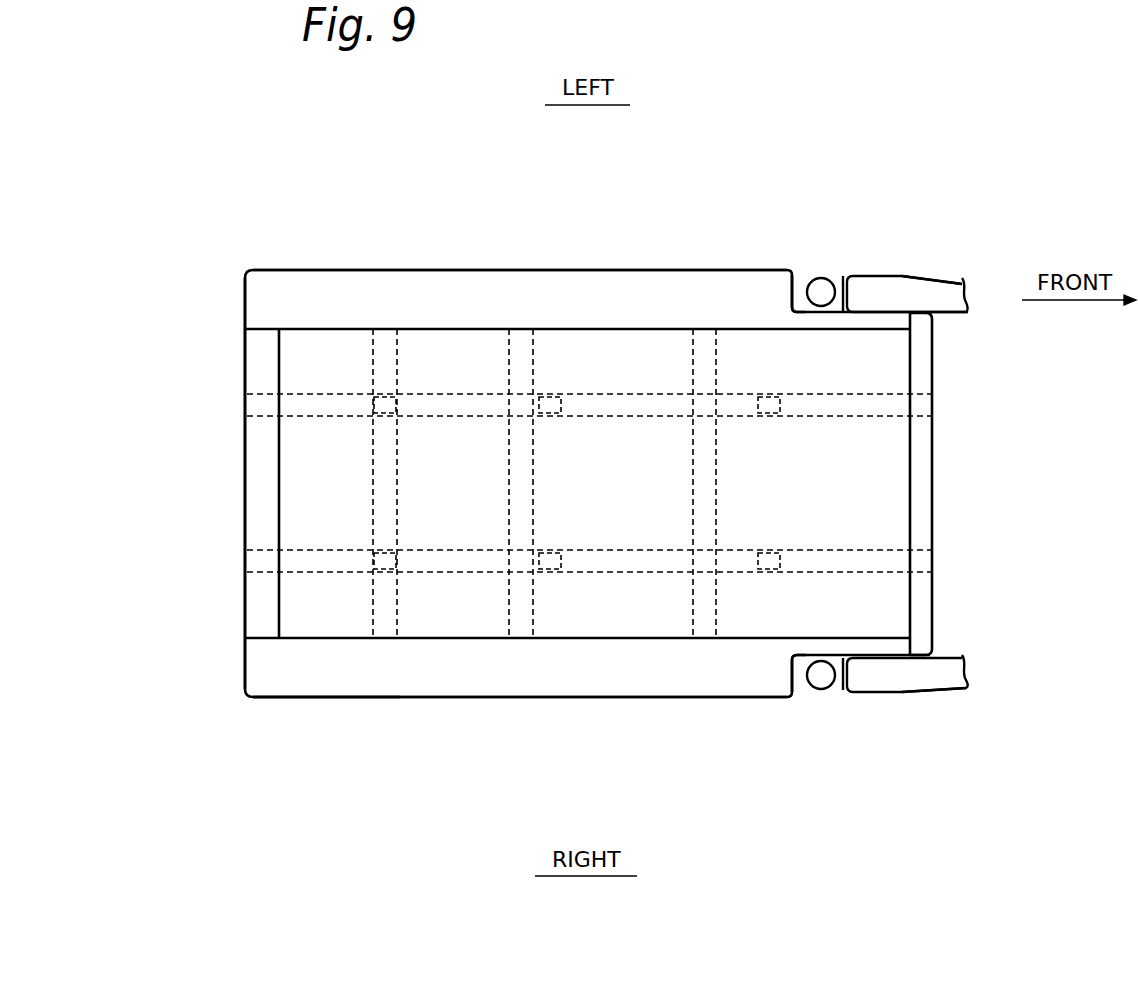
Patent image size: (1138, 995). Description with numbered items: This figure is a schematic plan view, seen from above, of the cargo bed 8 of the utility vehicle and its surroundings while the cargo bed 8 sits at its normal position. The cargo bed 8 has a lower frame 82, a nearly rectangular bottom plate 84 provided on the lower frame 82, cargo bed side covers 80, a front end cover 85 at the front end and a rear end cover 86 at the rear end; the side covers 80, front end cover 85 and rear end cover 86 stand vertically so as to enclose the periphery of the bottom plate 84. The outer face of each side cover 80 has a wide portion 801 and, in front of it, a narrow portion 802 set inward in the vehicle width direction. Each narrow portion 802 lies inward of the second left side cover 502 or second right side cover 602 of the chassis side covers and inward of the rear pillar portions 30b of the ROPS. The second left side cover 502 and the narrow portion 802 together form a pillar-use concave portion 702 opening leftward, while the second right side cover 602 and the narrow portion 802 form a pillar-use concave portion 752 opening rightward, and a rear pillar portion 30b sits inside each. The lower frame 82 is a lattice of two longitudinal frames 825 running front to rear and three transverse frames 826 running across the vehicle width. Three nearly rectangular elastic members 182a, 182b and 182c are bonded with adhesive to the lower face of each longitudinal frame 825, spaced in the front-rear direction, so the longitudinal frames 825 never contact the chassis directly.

The cargo bed 8 is at (593, 470).
The cargo bed side cover 80 is at (508, 290).
The wide portion 801 is at (680, 268).
The narrow portion 802 is at (843, 276).
The lower frame 82 is at (288, 618).
The bottom plate 84 is at (325, 614).
The front end cover 85 is at (925, 597).
The rear end cover 86 is at (245, 604).
The longitudinal frame 825 is at (326, 394).
The transverse frame 826 is at (508, 370).
The elastic member 182a is at (770, 415).
The elastic member 182b is at (556, 394).
The elastic member 182c is at (372, 408).
The pillar-use concave portion 702 is at (802, 285).
The pillar-use concave portion 752 is at (797, 672).
The rear pillar portion 30b is at (822, 278).
The second left side cover 502 is at (915, 278).
The second right side cover 602 is at (917, 690).